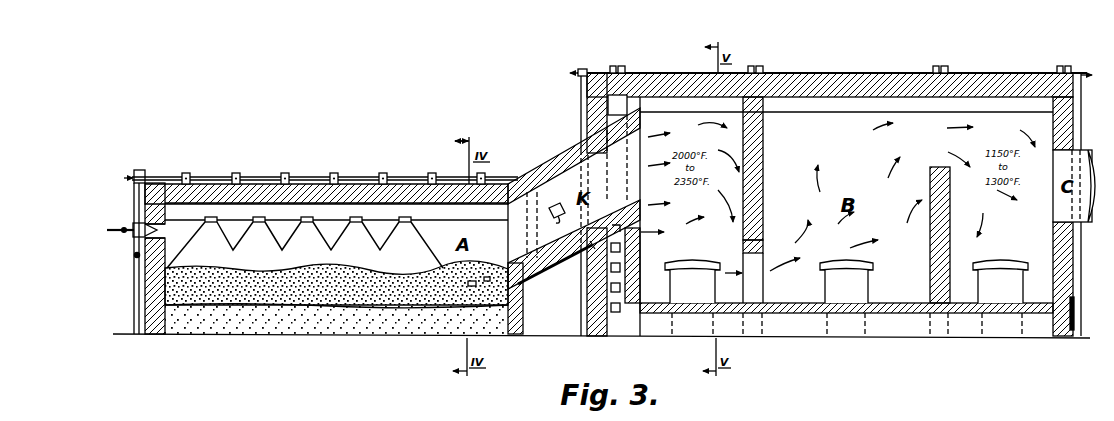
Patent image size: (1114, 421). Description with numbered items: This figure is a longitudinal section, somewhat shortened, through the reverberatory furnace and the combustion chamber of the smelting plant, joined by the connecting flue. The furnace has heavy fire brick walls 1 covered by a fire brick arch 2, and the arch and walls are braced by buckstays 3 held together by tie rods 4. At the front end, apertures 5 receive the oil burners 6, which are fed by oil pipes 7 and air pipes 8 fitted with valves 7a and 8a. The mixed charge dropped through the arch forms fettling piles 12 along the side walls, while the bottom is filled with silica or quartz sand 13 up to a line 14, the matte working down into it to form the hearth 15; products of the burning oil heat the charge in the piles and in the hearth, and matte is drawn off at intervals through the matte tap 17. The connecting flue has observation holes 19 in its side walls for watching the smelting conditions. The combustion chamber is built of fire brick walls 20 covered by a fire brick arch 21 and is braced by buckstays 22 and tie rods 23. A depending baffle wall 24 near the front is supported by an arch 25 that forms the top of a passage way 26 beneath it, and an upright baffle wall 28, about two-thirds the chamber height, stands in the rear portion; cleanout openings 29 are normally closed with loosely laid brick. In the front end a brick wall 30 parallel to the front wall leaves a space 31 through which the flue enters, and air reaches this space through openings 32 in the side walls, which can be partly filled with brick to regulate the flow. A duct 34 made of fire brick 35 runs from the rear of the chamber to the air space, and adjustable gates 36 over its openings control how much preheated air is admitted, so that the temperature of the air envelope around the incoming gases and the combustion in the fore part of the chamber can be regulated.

The fire brick walls 1 is at (152, 203).
The fire brick arch 2 is at (440, 205).
The buckstays 3 is at (186, 173).
The tie rods 4 is at (320, 177).
The apertures 5 is at (167, 236).
The oil burners 6 is at (137, 223).
The oil pipes 7 is at (133, 284).
The valve 7a is at (135, 257).
The air pipes 8 is at (118, 228).
The valve 8a is at (123, 233).
The fettling piles 12 is at (305, 242).
The silica or quartz sand 13 is at (336, 319).
The line 14 is at (262, 306).
The hearth 15 is at (336, 283).
The matte tap 17 is at (470, 286).
The observation holes 19 is at (554, 219).
The fire brick walls 20 is at (592, 112).
The fire brick arch 21 is at (903, 98).
The buckstays 22 is at (583, 70).
The tie rods 23 is at (840, 73).
The depending baffle wall 24 is at (764, 162).
The arch 25 is at (764, 249).
The passage way 26 is at (764, 285).
The upright baffle wall 28 is at (951, 250).
The cleanout openings 29 is at (846, 281).
The brick wall 30 is at (641, 280).
The space 31 is at (617, 105).
The openings 32 is at (617, 313).
The duct 34 is at (847, 324).
The fire brick 35 is at (897, 303).
The adjustable gates 36 is at (1076, 304).